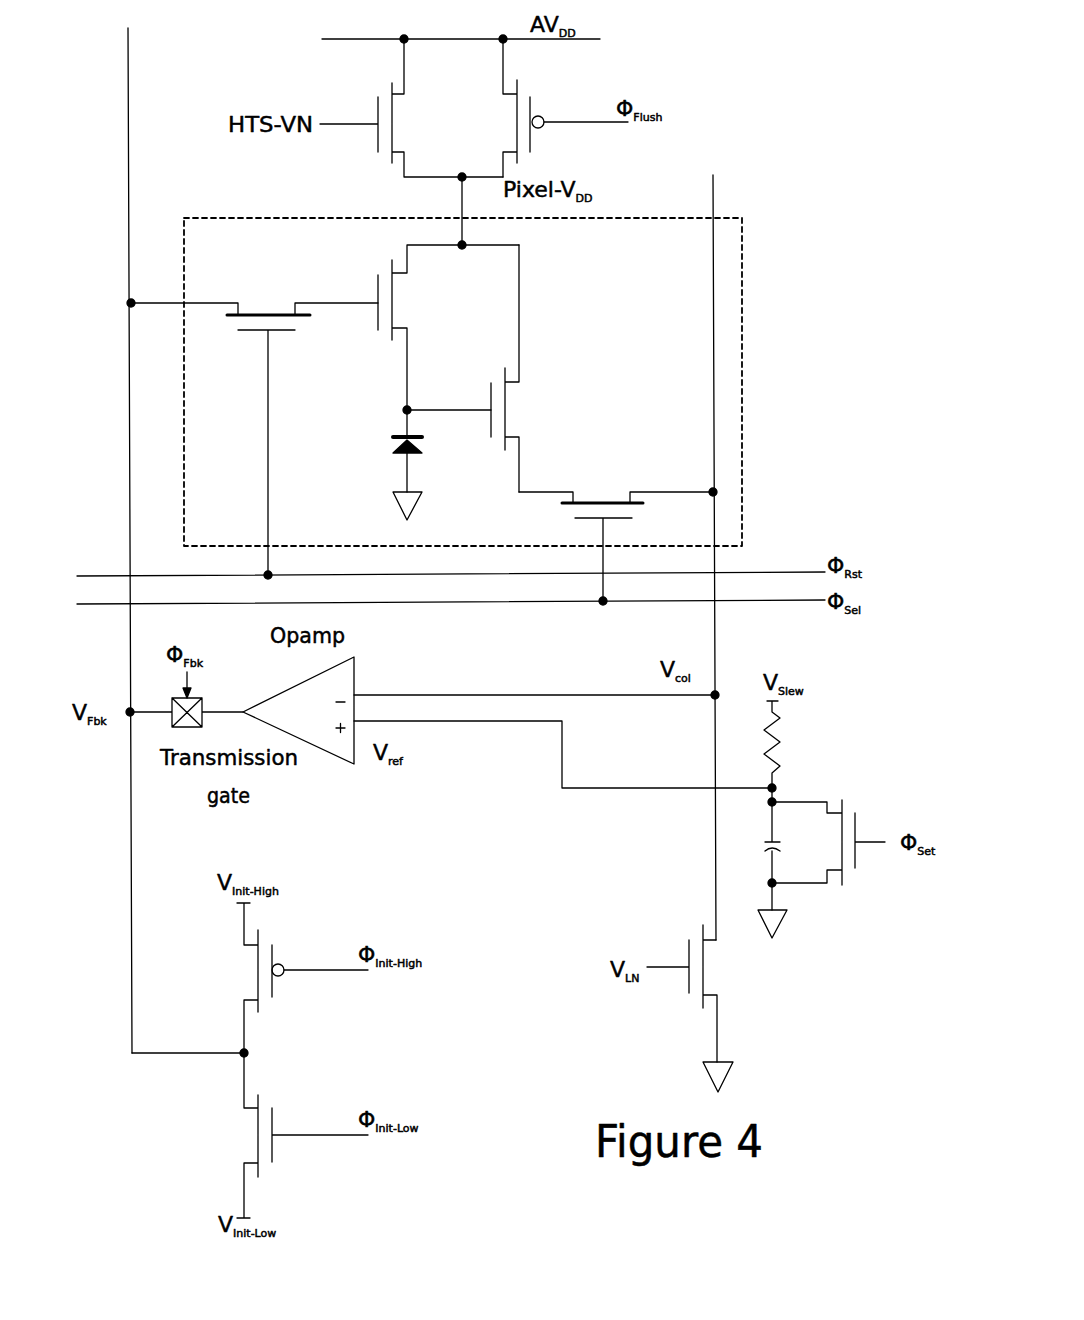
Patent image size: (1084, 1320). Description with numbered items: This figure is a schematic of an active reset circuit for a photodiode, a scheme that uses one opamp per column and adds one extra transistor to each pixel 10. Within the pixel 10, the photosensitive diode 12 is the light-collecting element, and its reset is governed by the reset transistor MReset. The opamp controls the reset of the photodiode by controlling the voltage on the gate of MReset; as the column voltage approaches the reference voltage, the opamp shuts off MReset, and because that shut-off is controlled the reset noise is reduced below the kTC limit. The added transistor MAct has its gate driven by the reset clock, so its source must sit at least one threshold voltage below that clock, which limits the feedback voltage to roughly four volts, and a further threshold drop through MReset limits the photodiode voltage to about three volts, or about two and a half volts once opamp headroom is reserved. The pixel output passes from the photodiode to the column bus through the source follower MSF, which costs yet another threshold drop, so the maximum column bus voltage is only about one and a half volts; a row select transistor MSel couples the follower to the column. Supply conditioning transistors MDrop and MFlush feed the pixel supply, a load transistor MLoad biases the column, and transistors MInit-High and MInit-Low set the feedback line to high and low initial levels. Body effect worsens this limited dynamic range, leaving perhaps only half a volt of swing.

The pixel 10 is at (742, 289).
The photosensitive diode 12 is at (383, 443).
The drop transistor MDrop is at (411, 108).
The flush transistor MFlush is at (565, 108).
The reset transistor MReset is at (448, 327).
The source follower transistor MSF is at (521, 368).
The select transistor MSel is at (616, 529).
The active reset transistor MAct is at (254, 423).
The load transistor MLoad is at (712, 1008).
The init-high transistor MInit-High is at (302, 978).
The init-low transistor MInit-Low is at (302, 1135).